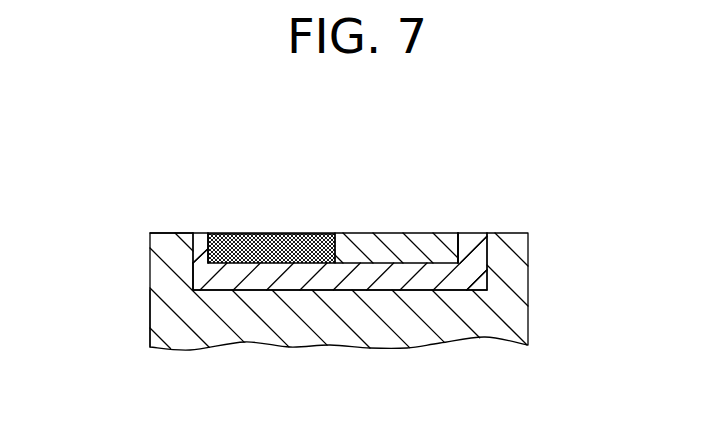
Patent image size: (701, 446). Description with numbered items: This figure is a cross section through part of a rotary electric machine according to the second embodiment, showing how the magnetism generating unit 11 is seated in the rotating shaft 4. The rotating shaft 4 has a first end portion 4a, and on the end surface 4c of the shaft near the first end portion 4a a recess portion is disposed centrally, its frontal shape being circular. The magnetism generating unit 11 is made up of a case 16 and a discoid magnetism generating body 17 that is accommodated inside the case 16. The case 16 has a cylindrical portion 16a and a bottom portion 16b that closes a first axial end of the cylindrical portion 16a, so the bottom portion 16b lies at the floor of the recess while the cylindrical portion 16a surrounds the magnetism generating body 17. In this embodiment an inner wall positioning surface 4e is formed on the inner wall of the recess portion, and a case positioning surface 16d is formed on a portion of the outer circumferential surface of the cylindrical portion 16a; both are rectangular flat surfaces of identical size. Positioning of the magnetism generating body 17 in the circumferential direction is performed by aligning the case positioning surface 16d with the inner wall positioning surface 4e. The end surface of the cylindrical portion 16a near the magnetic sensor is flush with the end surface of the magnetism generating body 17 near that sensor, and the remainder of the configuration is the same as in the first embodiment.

The rotating shaft 4 is at (530, 299).
The first end portion 4a is at (150, 303).
The end surface 4c is at (163, 233).
The inner wall positioning surface 4e is at (193, 259).
The magnetism generating unit 11 is at (460, 233).
The case 16 is at (487, 260).
The cylindrical portion 16a is at (475, 233).
The bottom portion 16b is at (297, 278).
The case positioning surface 16d is at (184, 233).
The magnetism generating body 17 is at (388, 233).